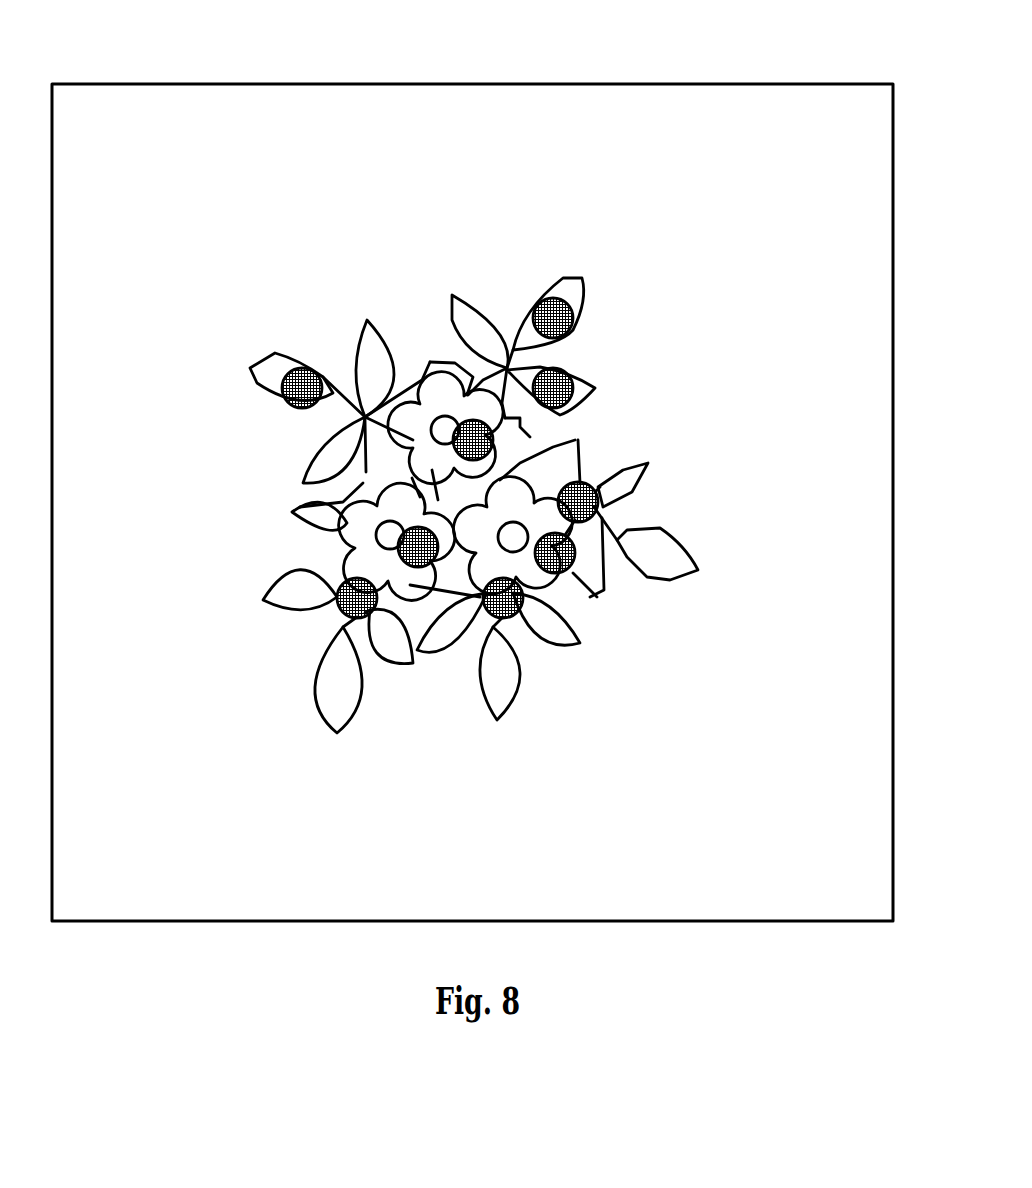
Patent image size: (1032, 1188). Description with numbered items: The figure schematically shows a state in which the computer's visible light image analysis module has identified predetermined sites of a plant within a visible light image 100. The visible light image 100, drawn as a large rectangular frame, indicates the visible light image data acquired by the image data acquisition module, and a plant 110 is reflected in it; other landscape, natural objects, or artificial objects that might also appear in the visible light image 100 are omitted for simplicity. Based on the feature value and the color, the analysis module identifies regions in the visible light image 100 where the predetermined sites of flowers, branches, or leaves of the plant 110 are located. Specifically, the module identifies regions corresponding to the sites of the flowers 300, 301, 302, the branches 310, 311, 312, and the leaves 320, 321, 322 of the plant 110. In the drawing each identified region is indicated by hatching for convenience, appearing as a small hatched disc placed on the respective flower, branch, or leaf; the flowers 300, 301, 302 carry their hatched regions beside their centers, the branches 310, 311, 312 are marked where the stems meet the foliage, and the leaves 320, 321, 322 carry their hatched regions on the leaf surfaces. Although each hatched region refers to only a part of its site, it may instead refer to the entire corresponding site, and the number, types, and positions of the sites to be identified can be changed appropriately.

The visible light image 100 is at (762, 100).
The plant 110 is at (575, 284).
The flower 300 is at (494, 438).
The flower 301 is at (573, 566).
The flower 302 is at (350, 541).
The branch 310 is at (596, 500).
The branch 311 is at (518, 625).
The branch 312 is at (373, 625).
The leaf 320 is at (575, 316).
The leaf 321 is at (580, 392).
The leaf 322 is at (300, 404).